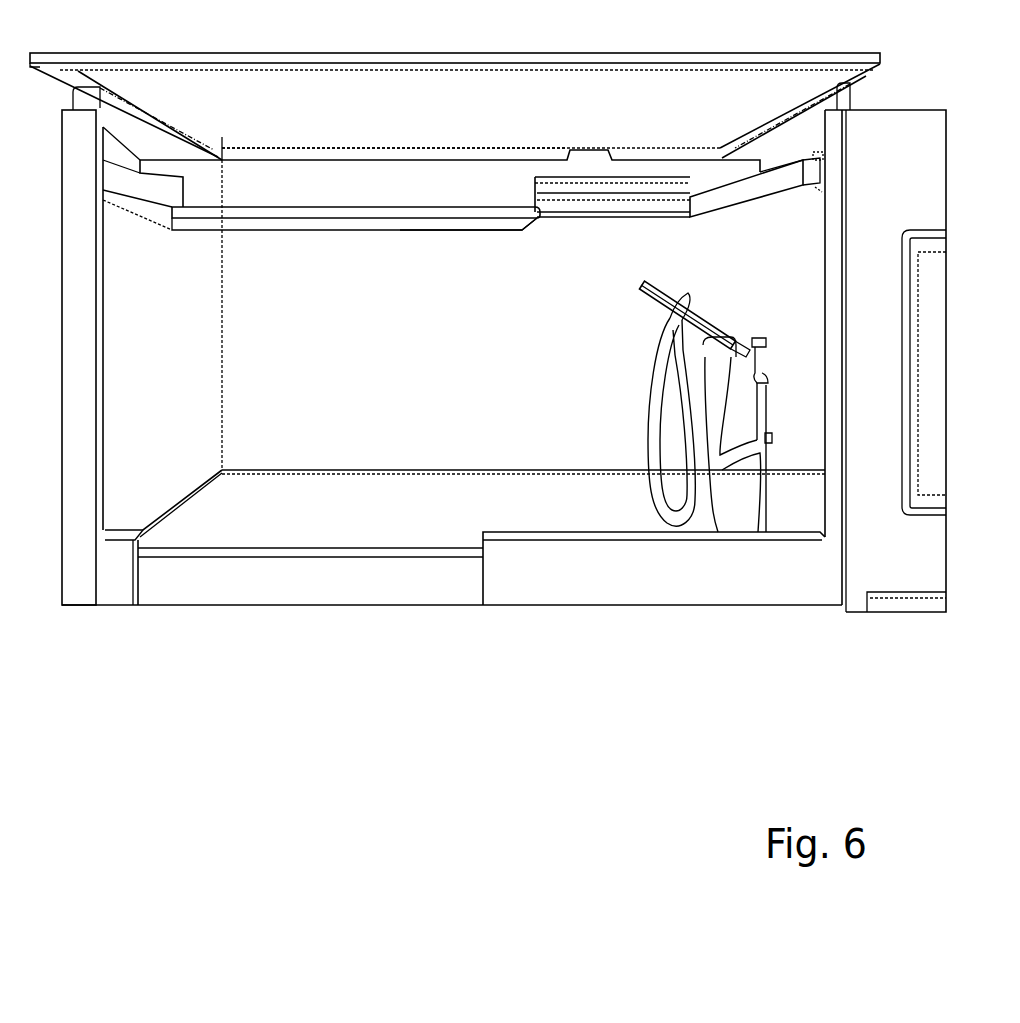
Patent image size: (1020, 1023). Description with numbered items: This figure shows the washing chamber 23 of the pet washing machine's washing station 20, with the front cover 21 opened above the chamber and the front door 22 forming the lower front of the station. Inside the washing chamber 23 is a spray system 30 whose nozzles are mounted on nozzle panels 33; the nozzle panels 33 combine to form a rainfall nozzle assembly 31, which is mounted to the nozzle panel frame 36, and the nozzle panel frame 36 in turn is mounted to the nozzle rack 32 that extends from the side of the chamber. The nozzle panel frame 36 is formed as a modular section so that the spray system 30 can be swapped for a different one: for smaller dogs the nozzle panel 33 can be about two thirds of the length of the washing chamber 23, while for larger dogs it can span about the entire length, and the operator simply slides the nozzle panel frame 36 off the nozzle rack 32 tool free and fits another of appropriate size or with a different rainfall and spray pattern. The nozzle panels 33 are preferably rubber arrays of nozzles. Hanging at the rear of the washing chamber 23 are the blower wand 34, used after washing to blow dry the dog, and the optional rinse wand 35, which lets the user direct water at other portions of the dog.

The washing station 20 is at (662, 587).
The front cover 21 is at (177, 80).
The front door 22 is at (405, 588).
The washing chamber 23 is at (170, 338).
The spray system 30 is at (483, 172).
The rainfall nozzle assembly 31 is at (250, 232).
The nozzle rack 32 is at (813, 168).
The nozzle panel 33 is at (507, 226).
The blower wand 34 is at (688, 293).
The rinse wand 35 is at (705, 315).
The nozzle panel frame 36 is at (308, 177).